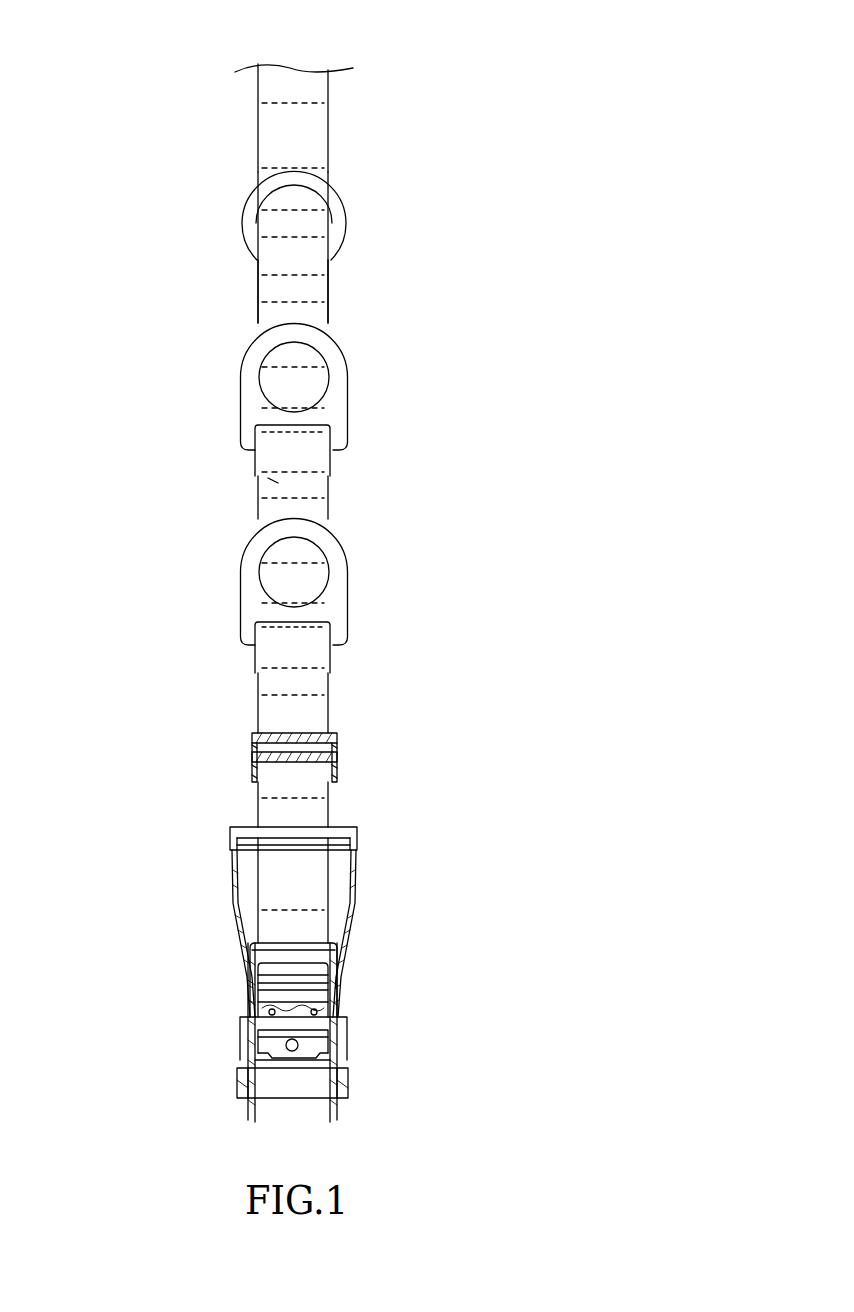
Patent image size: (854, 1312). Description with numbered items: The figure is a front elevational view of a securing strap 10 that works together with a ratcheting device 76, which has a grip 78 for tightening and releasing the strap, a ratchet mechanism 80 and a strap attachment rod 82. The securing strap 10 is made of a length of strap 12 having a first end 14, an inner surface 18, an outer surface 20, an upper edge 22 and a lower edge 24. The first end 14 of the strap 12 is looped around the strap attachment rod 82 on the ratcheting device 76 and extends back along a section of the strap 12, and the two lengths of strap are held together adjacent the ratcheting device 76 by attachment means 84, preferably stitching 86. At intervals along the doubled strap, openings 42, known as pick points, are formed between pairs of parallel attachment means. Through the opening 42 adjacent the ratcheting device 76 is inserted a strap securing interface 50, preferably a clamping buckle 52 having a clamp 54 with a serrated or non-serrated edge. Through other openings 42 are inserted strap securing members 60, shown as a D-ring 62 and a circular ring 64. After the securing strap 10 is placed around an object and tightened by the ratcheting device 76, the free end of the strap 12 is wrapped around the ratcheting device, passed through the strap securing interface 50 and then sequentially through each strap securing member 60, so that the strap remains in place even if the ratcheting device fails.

The securing strap 10 is at (118, 46).
The strap 12 is at (307, 317).
The first end 14 is at (273, 67).
The inner surface 18 is at (258, 468).
The outer surface 20 is at (361, 276).
The upper edge 22 is at (315, 287).
The lower edge 24 is at (258, 512).
The openings 42 is at (328, 460).
The strap securing interface 50 is at (333, 755).
The clamping buckle 52 is at (359, 738).
The clamp 54 is at (325, 745).
The strap securing member 60 is at (400, 374).
The D-ring 62 is at (330, 408).
The circular ring 64 is at (297, 173).
The ratcheting device 76 is at (343, 1000).
The grip 78 is at (272, 853).
The ratchet mechanism 80 is at (261, 974).
The strap attachment rod 82 is at (333, 982).
The attachment means 84 is at (310, 798).
The stitching 86 is at (293, 804).